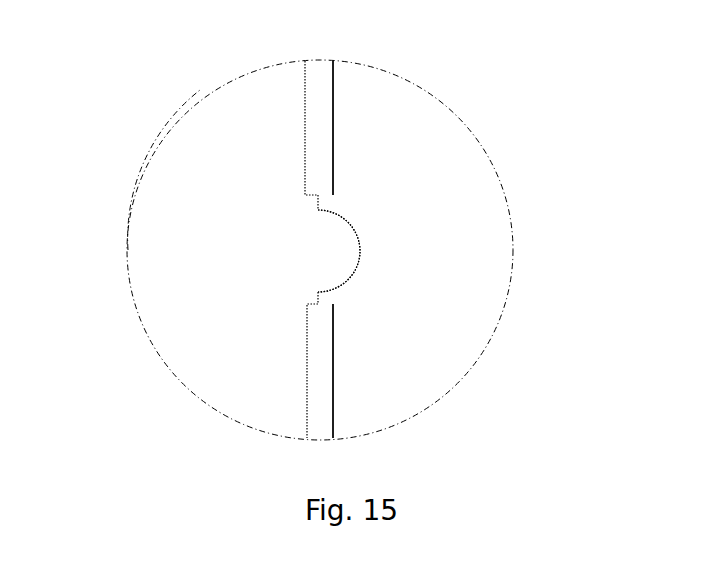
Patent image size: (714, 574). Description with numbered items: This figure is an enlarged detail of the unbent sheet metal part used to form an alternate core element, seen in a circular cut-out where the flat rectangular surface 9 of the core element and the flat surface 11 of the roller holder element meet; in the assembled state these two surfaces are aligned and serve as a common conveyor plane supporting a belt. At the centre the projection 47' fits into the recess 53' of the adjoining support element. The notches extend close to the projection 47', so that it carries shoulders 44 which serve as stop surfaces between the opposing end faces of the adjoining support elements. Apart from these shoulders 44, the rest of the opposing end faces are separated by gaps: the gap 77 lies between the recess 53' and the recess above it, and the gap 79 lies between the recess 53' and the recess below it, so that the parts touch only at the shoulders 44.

The flat rectangular surface 9 is at (500, 168).
The flat surface 11 is at (172, 118).
The shoulders 44 is at (320, 197).
The projection 47' is at (437, 251).
The recess 53' is at (222, 251).
The gap 77 is at (317, 92).
The gap 79 is at (316, 340).